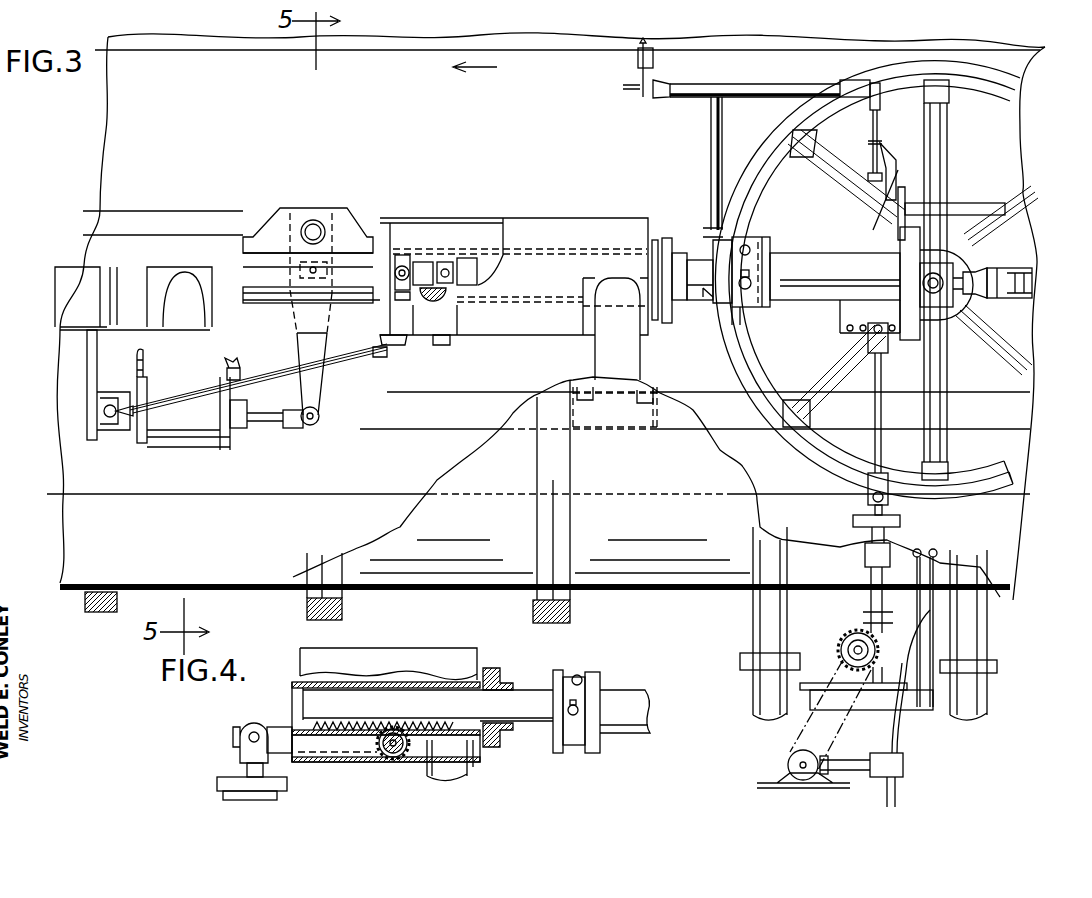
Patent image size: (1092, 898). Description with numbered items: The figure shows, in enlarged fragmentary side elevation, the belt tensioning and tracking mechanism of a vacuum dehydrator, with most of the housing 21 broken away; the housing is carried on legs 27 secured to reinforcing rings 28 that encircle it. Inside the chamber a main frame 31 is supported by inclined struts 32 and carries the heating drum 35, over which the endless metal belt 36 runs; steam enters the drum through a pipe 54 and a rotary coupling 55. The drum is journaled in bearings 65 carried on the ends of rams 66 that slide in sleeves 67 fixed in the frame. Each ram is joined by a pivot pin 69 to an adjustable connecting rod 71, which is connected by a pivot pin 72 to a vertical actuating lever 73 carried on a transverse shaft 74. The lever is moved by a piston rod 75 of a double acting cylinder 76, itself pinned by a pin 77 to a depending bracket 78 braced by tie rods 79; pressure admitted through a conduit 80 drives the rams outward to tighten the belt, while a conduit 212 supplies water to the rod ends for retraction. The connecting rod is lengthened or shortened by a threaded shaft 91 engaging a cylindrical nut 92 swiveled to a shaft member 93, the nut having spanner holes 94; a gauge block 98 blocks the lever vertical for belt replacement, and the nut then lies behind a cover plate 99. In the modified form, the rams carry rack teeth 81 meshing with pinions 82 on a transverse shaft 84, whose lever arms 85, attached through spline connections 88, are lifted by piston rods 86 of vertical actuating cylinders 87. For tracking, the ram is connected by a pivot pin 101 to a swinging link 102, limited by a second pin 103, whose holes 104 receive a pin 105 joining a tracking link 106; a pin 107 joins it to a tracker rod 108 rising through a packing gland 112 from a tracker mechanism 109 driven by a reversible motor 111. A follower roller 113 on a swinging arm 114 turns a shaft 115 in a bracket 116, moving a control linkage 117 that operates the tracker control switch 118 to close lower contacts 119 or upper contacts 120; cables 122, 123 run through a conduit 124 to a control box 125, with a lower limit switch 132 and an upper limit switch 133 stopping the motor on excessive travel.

In FIG. 3, the housing 21 is at (106, 118).
In FIG. 3, the legs 27 is at (752, 700).
In FIG. 3, the reinforcing rings 28 is at (572, 612).
In FIG. 3, the main frame 31 is at (575, 220).
In FIG. 4, the main frame 31 is at (378, 648).
In FIG. 3, the struts 32 is at (190, 269).
In FIG. 4, the struts 32 is at (463, 773).
In FIG. 3, the heating drum 35 is at (1014, 80).
In FIG. 3, the belt 36 is at (106, 55).
In FIG. 3, the pipe 54 is at (1010, 298).
In FIG. 3, the rotary coupling 55 is at (985, 272).
In FIG. 3, the bearings 65 is at (955, 262).
In FIG. 3, the ram structures 66 is at (699, 253).
In FIG. 4, the ram structures 66 is at (517, 690).
In FIG. 3, the sleeve 67 is at (515, 250).
In FIG. 4, the sleeve 67 is at (450, 688).
In FIG. 3, the pivot pin 69 is at (469, 268).
In FIG. 3, the connecting rod 71 is at (404, 262).
In FIG. 3, the pivot pin 72 is at (298, 271).
In FIG. 3, the actuating lever 73 is at (300, 344).
In FIG. 3, the transverse shaft 74 is at (309, 220).
In FIG. 3, the piston rod 75 is at (250, 413).
In FIG. 3, the cylinder 76 is at (197, 450).
In FIG. 3, the pin 77 is at (115, 430).
In FIG. 3, the bracket 78 is at (82, 432).
In FIG. 3, the tie rods 79 is at (347, 360).
In FIG. 3, the conduit 80 is at (137, 360).
In FIG. 4, the rack teeth 81 is at (416, 722).
In FIG. 4, the pinions 82 is at (377, 745).
In FIG. 4, the transverse shaft 84 is at (386, 758).
In FIG. 4, the lever arm 85 is at (283, 727).
In FIG. 4, the piston rod 86 is at (248, 736).
In FIG. 4, the actuating cylinder 87 is at (288, 784).
In FIG. 4, the spline connections 88 is at (396, 758).
In FIG. 3, the threaded shaft 91 is at (447, 268).
In FIG. 3, the cylindrical nut 92 is at (424, 262).
In FIG. 3, the shaft member 93 is at (326, 236).
In FIG. 3, the spanner holes 94 is at (412, 305).
In FIG. 3, the gauge block 98 is at (290, 428).
In FIG. 3, the cover plate 99 is at (395, 298).
In FIG. 3, the pivot pin 101 is at (750, 304).
In FIG. 4, the pivot pin 101 is at (575, 716).
In FIG. 3, the swinging link 102 is at (818, 258).
In FIG. 4, the swinging link 102 is at (648, 735).
In FIG. 3, the second pin 103 is at (755, 242).
In FIG. 4, the second pin 103 is at (582, 680).
In FIG. 3, the holes 104 is at (864, 325).
In FIG. 3, the pin 105 is at (867, 338).
In FIG. 3, the tracking link 106 is at (881, 394).
In FIG. 3, the pin 107 is at (866, 498).
In FIG. 3, the tracker rod 108 is at (852, 520).
In FIG. 3, the tracker mechanism 109 is at (841, 634).
In FIG. 3, the reversible motor 111 is at (787, 763).
In FIG. 3, the packing gland 112 is at (864, 555).
In FIG. 3, the follower roller 113 is at (638, 62).
In FIG. 3, the swinging arm 114 is at (668, 83).
In FIG. 3, the shaft 115 is at (850, 80).
In FIG. 3, the bracket 116 is at (722, 136).
In FIG. 3, the control linkage 117 is at (879, 136).
In FIG. 3, the tracker control switch 118 is at (903, 159).
In FIG. 3, the lower contacts 119 is at (893, 186).
In FIG. 3, the upper contacts 120 is at (872, 172).
In FIG. 3, the cable 122 is at (948, 410).
In FIG. 3, the cable 123 is at (948, 368).
In FIG. 3, the conduit 124 is at (903, 742).
In FIG. 3, the control box 125 is at (904, 768).
In FIG. 3, the lower limit switch 132 is at (883, 657).
In FIG. 3, the upper limit switch 133 is at (917, 600).
In FIG. 3, the conduit 212 is at (226, 356).